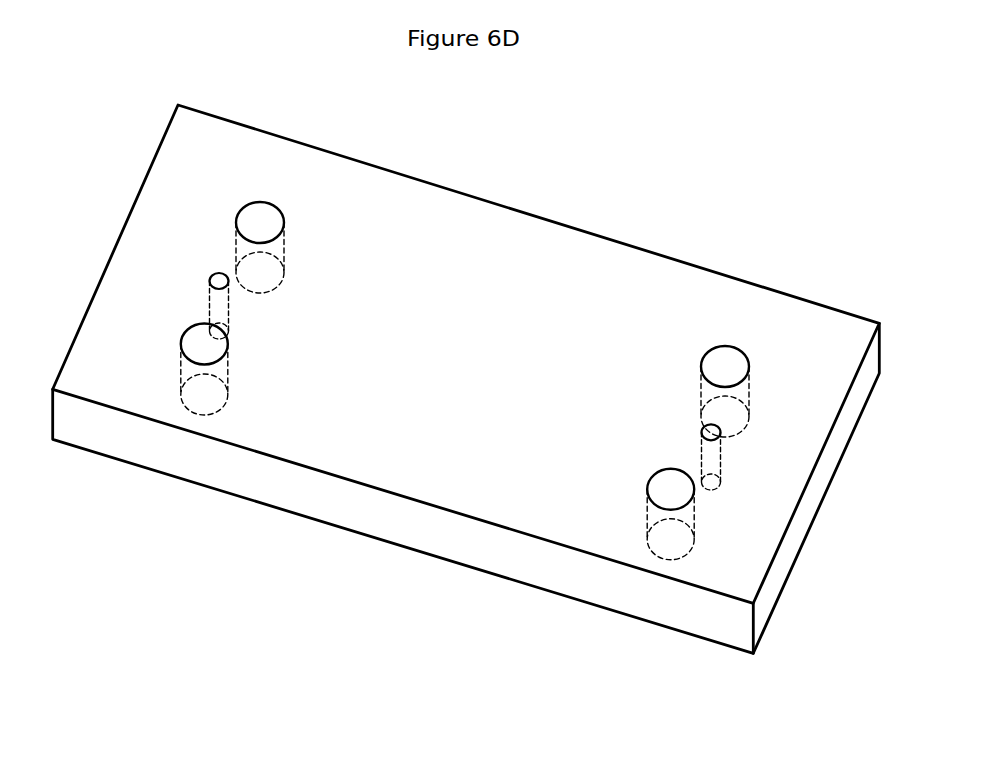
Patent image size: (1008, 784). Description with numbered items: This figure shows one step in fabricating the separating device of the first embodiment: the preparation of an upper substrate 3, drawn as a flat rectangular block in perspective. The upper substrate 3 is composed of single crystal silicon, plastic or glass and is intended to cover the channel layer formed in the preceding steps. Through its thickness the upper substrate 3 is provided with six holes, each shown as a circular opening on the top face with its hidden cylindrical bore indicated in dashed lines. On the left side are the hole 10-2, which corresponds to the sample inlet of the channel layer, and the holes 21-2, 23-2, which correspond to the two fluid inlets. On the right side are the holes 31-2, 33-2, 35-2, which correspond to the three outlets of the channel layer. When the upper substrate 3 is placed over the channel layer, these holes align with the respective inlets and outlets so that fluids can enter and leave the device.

The upper substrate 3 is at (377, 519).
The hole 10-2 is at (215, 273).
The hole 21-2 is at (258, 220).
The hole 23-2 is at (193, 342).
The hole 31-2 is at (727, 360).
The hole 33-2 is at (667, 493).
The hole 35-2 is at (717, 438).